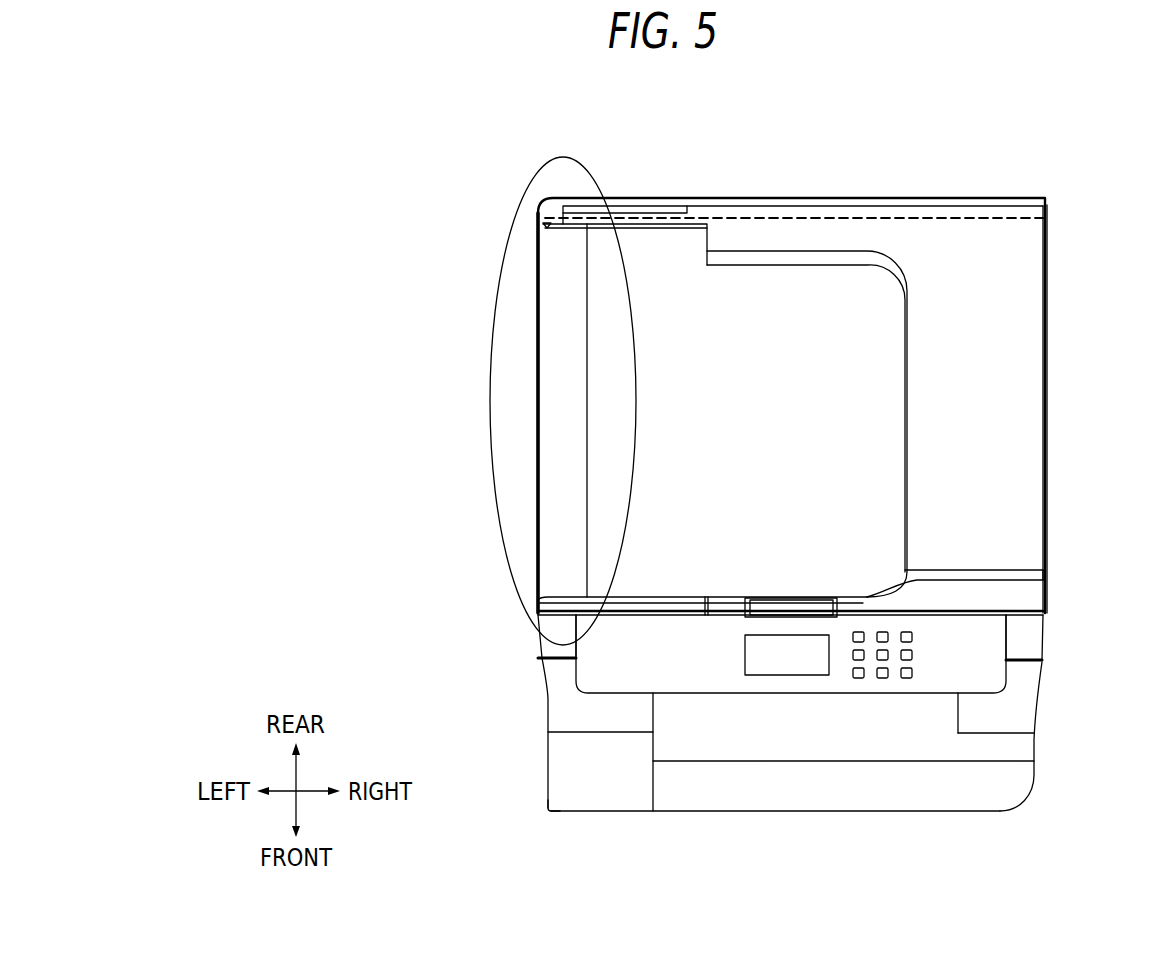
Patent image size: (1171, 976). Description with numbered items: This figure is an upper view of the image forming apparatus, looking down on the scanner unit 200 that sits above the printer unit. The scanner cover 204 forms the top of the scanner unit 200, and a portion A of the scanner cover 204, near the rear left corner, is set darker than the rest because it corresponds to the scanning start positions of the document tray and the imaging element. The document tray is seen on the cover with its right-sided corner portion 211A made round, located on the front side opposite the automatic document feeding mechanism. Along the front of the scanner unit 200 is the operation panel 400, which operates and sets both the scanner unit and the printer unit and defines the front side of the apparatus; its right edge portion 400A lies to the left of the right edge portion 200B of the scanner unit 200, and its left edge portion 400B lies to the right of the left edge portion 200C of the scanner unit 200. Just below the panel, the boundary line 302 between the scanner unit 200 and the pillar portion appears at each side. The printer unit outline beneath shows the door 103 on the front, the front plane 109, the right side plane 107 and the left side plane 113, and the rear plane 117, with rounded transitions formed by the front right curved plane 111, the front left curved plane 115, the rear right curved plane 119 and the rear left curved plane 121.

The portion A of scanner cover A is at (556, 145).
The rear left curved plane 121 is at (535, 217).
The rear plane 117 is at (765, 206).
The scanner cover 204 is at (910, 230).
The rear right curved plane 119 is at (1048, 222).
The left side plane 113 is at (538, 382).
The scanner unit 200 is at (1015, 388).
The right side plane 107 is at (1047, 458).
The corner portion of document tray 211A is at (938, 573).
The operation panel 400 is at (976, 634).
The right edge portion of operation panel 400A is at (1007, 636).
The left edge portion of operation panel 400B is at (536, 623).
The right edge portion of scanner unit 200B is at (1045, 643).
The left edge portion of scanner unit 200C is at (538, 628).
The boundary line 302 is at (550, 663).
The door 103 is at (1000, 770).
The front right curved plane 111 is at (1025, 797).
The front plane 109 is at (770, 812).
The front left curved plane 115 is at (550, 810).